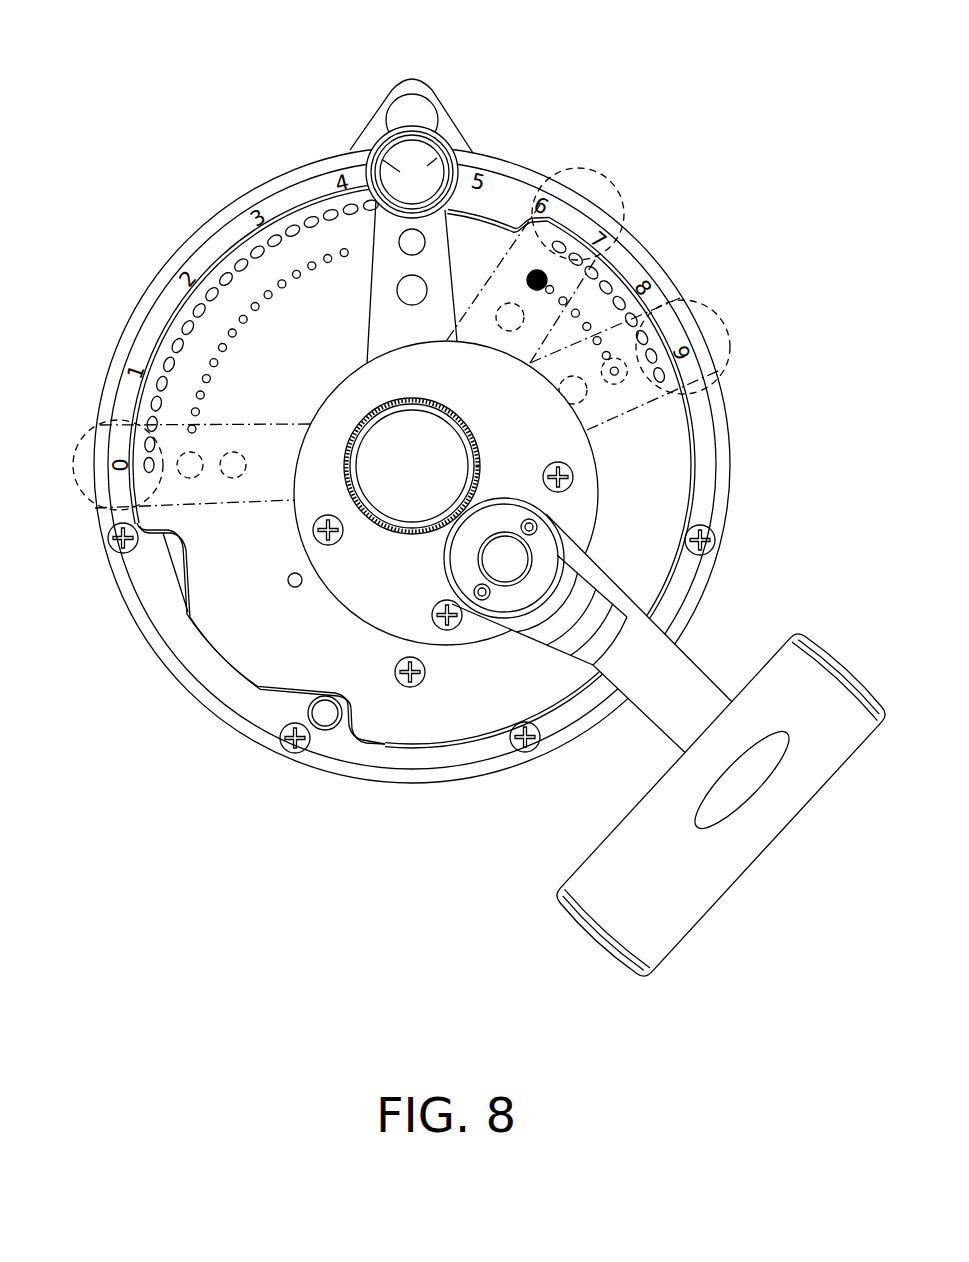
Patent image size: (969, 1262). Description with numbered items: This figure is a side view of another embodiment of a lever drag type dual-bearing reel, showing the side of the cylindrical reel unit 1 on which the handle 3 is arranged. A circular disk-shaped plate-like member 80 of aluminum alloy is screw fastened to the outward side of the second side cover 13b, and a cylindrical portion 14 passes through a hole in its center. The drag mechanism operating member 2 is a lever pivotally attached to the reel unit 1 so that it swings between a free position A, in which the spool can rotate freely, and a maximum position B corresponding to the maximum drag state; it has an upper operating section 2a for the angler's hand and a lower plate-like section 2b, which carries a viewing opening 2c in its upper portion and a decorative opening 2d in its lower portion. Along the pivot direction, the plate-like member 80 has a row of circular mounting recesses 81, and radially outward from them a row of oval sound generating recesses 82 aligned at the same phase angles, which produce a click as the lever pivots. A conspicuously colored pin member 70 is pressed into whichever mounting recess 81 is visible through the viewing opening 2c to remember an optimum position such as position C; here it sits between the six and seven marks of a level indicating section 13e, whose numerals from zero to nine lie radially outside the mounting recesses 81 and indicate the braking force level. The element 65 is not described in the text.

The reel unit 1 is at (688, 250).
The drag mechanism operating member 2 is at (434, 183).
The operating section 2a is at (399, 237).
The plate-like section 2b is at (397, 290).
The viewing opening 2c is at (382, 256).
The decorative opening 2d is at (287, 227).
The handle 3 is at (748, 927).
The second side cover 13b is at (263, 707).
The level indicating section 13e is at (253, 220).
The cylindrical portion 14 is at (587, 513).
The mounting lug 65 is at (423, 100).
The pin member 70 is at (545, 272).
The plate-like member 80 is at (223, 620).
The mounting recesses 81 is at (211, 361).
The sound generating recesses 82 is at (160, 383).
The free position A is at (104, 465).
The maximum position B is at (693, 347).
The optimum position C is at (583, 213).